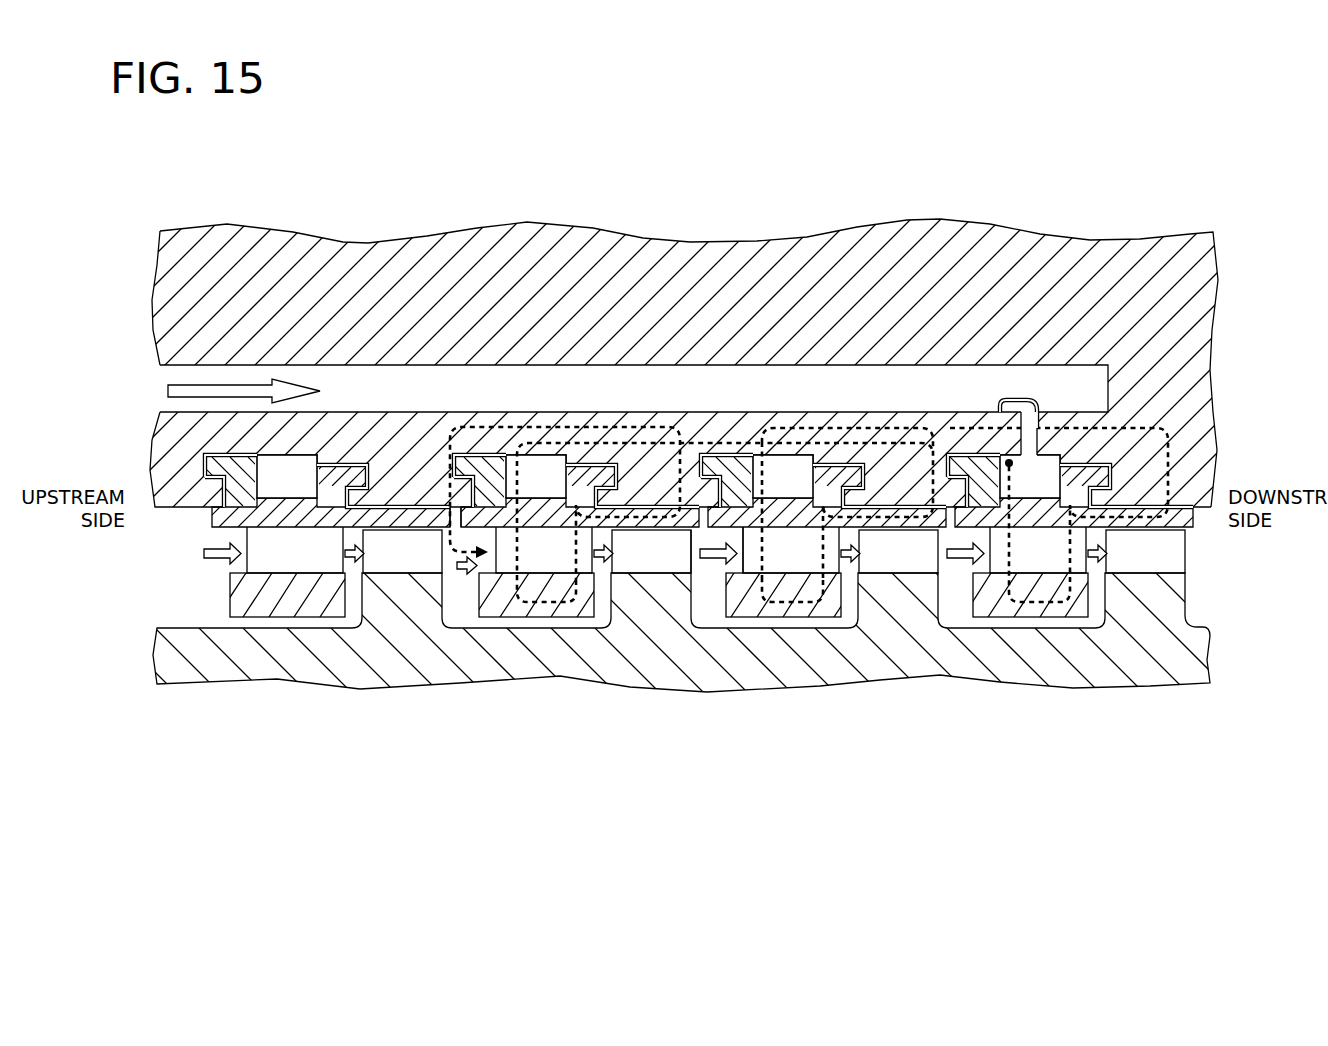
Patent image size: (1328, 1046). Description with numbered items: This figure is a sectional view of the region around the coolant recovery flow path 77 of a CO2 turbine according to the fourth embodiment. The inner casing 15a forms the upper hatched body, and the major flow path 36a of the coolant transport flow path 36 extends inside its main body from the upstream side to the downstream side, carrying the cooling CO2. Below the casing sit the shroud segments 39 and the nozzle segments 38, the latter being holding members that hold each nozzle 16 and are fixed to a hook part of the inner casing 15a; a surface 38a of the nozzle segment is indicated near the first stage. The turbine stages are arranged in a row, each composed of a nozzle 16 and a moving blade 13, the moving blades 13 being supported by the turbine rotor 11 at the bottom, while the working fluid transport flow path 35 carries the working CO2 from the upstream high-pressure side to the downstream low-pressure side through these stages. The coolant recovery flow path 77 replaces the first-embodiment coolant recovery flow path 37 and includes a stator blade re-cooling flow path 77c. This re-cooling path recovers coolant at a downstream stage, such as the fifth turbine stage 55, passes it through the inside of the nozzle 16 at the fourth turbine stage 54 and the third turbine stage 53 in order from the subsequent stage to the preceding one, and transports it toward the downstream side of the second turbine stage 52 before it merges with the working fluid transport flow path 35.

The inner casing 15a is at (1073, 250).
The coolant recovery flow path 77 is at (1134, 422).
The major flow path 36a is at (170, 366).
The shroud segment 39 is at (166, 447).
The nozzle segment 38 is at (215, 519).
The plate surface 38a is at (423, 503).
The second turbine stage 52 is at (387, 482).
The third turbine stage 53 is at (652, 490).
The fourth turbine stage 54 is at (890, 490).
The fifth turbine stage 55 is at (1158, 497).
The nozzle 16 is at (255, 567).
The moving blade 13 is at (393, 565).
The coolant recovery flow path 37 is at (457, 522).
The stator blade re-cooling flow path 77c is at (553, 606).
The working fluid transport flow path 35 is at (715, 562).
The coolant transport flow path 36 is at (1050, 612).
The turbine rotor 11 is at (1197, 639).